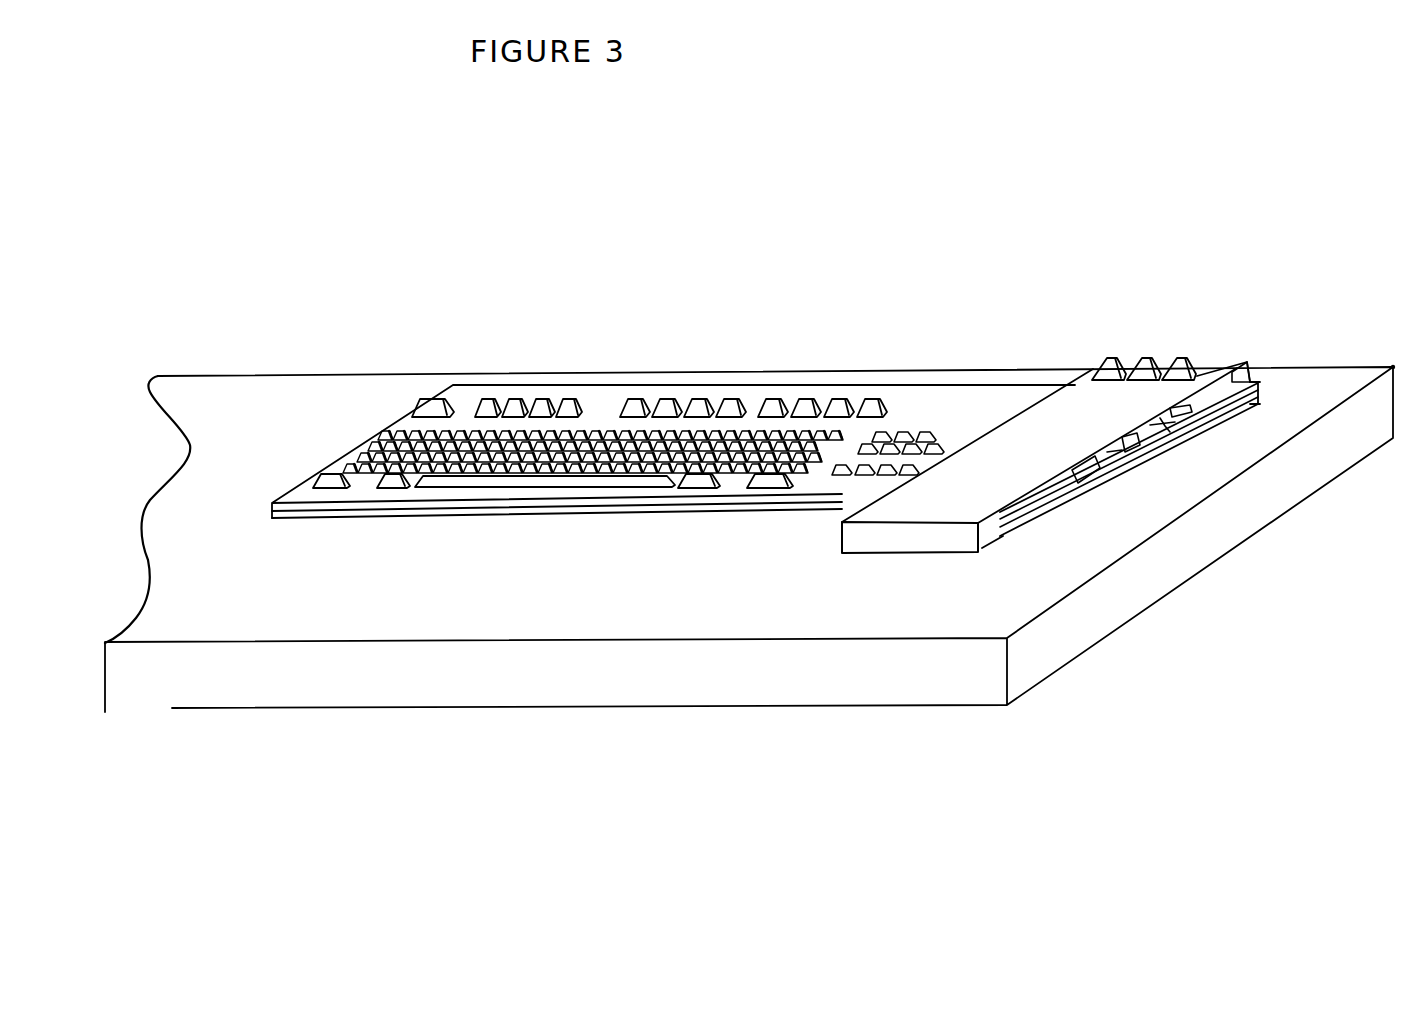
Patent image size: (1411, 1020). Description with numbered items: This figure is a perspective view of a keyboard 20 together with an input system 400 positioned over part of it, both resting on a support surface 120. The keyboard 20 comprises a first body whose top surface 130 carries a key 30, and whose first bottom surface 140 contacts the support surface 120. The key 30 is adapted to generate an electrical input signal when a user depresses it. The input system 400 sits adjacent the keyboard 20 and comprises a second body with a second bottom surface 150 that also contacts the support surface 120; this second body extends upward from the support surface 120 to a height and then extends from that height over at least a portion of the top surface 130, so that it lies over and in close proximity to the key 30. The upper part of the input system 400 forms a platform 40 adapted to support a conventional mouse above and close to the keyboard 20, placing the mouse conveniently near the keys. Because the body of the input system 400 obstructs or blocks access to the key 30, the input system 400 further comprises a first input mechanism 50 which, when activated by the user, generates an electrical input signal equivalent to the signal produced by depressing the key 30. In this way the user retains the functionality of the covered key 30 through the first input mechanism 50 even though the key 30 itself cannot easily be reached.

The keyboard 20 is at (673, 546).
The key 30 is at (1201, 510).
The platform 40 is at (1046, 464).
The first input mechanism 50 is at (1197, 357).
The support surface 120 is at (548, 600).
The top surface 130 is at (1133, 450).
The first bottom surface 140 is at (712, 535).
The second bottom surface 150 is at (906, 568).
The input system 400 is at (1248, 355).